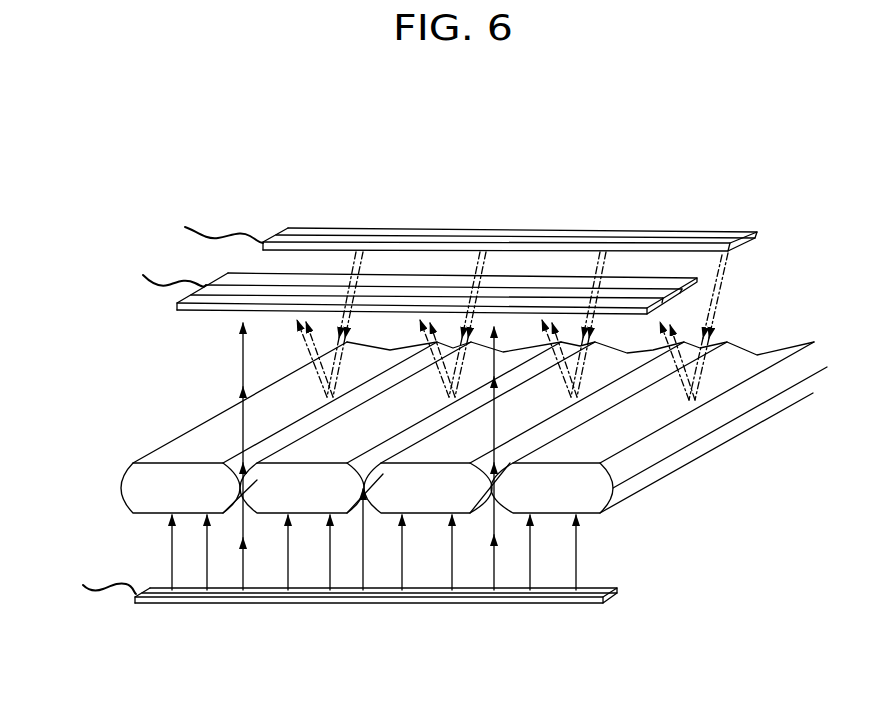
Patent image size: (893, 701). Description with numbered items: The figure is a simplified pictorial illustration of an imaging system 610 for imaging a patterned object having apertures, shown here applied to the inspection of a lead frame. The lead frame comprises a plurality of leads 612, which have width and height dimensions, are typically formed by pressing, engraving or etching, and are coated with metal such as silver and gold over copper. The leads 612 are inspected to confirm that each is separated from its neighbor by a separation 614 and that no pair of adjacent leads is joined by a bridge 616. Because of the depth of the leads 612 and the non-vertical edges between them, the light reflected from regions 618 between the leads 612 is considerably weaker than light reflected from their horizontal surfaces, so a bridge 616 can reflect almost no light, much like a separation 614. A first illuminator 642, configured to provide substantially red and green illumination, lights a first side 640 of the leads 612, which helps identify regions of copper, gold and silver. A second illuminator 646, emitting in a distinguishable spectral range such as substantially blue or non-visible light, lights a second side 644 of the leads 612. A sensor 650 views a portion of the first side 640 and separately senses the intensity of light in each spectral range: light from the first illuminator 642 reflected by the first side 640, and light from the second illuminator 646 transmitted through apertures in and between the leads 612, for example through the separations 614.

The imaging system 610 is at (143, 180).
The leads 612 is at (180, 447).
The separation 614 is at (510, 463).
The bridge 616 is at (365, 467).
The regions between leads 618 is at (283, 432).
The first side 640 is at (183, 374).
The first illuminator 642 is at (637, 233).
The second side 644 is at (108, 543).
The second illuminator 646 is at (355, 603).
The sensor 650 is at (243, 282).